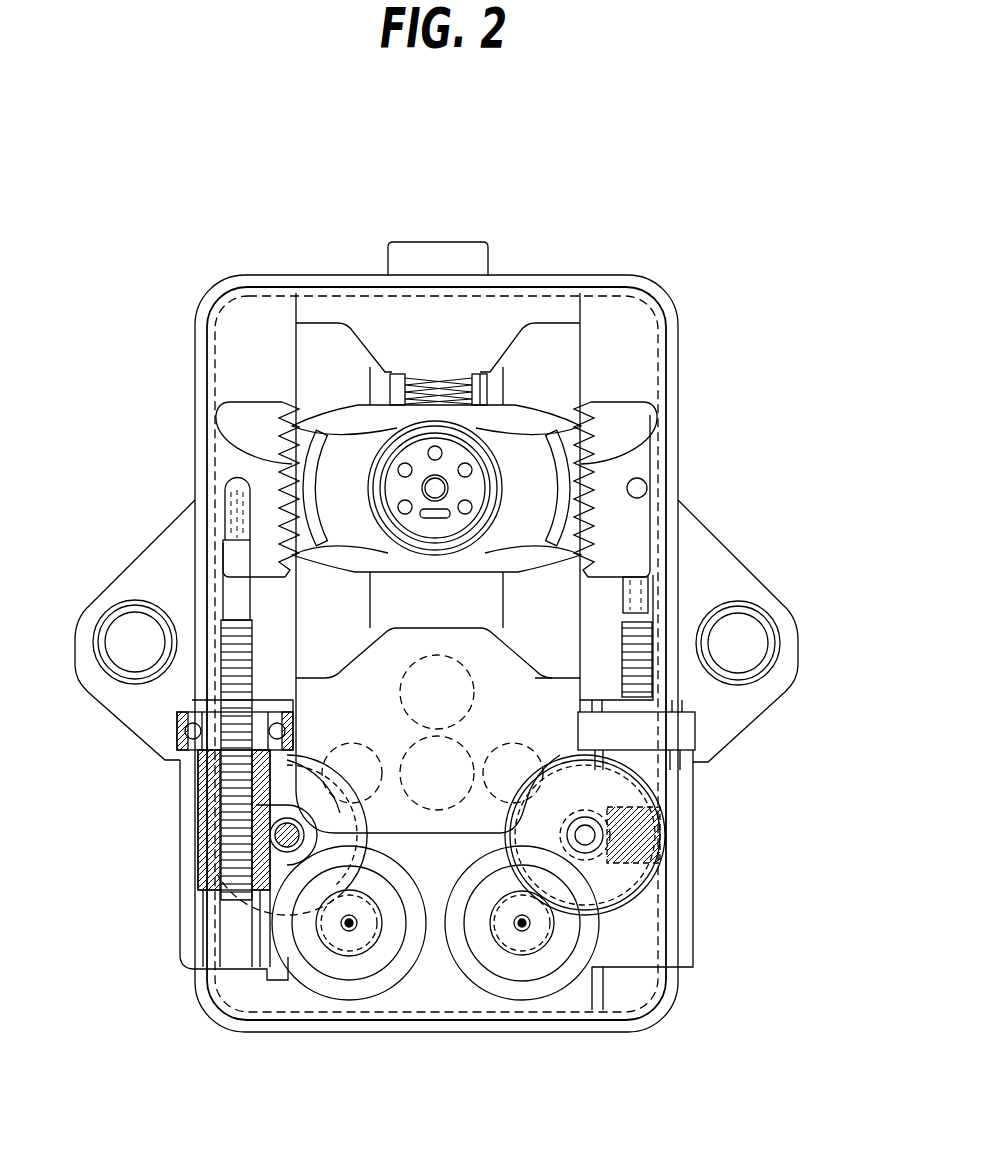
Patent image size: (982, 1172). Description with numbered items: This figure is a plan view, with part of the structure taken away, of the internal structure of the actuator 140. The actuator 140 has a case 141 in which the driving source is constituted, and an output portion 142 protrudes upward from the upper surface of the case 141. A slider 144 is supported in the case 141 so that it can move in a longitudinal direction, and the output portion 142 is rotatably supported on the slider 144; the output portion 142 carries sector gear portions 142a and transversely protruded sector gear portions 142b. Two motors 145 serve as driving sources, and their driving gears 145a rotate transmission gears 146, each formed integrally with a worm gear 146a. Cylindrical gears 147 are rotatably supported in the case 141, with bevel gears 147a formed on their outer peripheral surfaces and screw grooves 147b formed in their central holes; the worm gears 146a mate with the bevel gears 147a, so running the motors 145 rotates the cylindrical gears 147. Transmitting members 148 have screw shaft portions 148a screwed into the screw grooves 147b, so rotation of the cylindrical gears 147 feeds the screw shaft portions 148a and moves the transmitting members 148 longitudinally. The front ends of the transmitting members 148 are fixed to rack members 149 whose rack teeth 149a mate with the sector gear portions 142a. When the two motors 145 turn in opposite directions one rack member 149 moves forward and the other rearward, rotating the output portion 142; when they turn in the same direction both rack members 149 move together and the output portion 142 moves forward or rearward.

The actuator 140 is at (648, 242).
The case 141 is at (280, 278).
The output portion 142 is at (447, 423).
The sector gear portion 142a is at (403, 422).
The sector gear portion 142b is at (282, 470).
The slider 144 is at (487, 427).
The motor 145 is at (347, 985).
The driving gear 145a is at (365, 945).
The transmission gear 146 is at (630, 905).
The worm gear 146a is at (662, 805).
The cylindrical gear 147 is at (225, 790).
The bevel gear 147a is at (193, 853).
The screw groove 147b is at (227, 762).
The transmitting member 148 is at (237, 597).
The screw shaft portion 148a is at (243, 665).
The rack member 149 is at (255, 408).
The rack teeth 149a is at (300, 395).